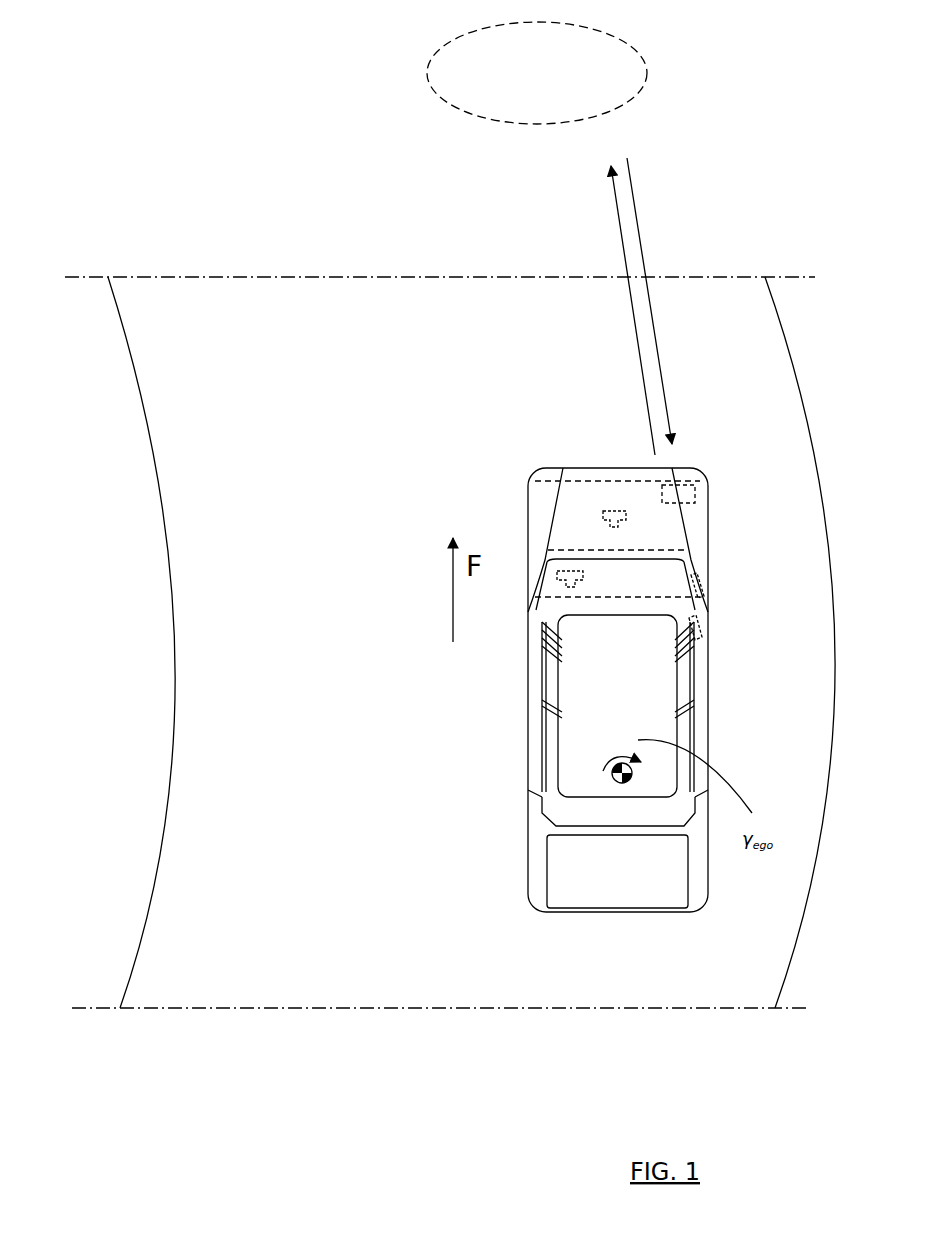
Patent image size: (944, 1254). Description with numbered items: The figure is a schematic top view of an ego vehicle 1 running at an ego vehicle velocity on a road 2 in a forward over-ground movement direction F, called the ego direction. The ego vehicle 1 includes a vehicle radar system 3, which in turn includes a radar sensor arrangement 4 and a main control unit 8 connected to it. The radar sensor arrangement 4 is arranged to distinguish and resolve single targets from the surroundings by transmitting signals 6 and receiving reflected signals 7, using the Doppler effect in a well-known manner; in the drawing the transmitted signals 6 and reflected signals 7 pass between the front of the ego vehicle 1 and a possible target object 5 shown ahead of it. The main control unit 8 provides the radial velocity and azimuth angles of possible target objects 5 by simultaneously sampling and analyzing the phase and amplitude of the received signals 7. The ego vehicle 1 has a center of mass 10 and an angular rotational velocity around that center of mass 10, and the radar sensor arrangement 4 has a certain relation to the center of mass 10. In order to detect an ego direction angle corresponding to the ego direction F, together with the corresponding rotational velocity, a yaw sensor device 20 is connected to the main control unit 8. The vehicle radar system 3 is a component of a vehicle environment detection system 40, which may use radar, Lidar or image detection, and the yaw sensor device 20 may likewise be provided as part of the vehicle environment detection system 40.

The ego vehicle 1 is at (643, 695).
The road 2 is at (211, 755).
The vehicle radar system 3 is at (682, 504).
The radar sensor arrangement 4 is at (697, 590).
The vehicle environment detection system 40 is at (698, 626).
The target object 5 is at (463, 33).
The transmitted signal 6 is at (615, 198).
The received reflected signal 7 is at (642, 247).
The main control unit 8 is at (613, 527).
The center of mass 10 is at (617, 783).
The yaw sensor device 20 is at (570, 588).